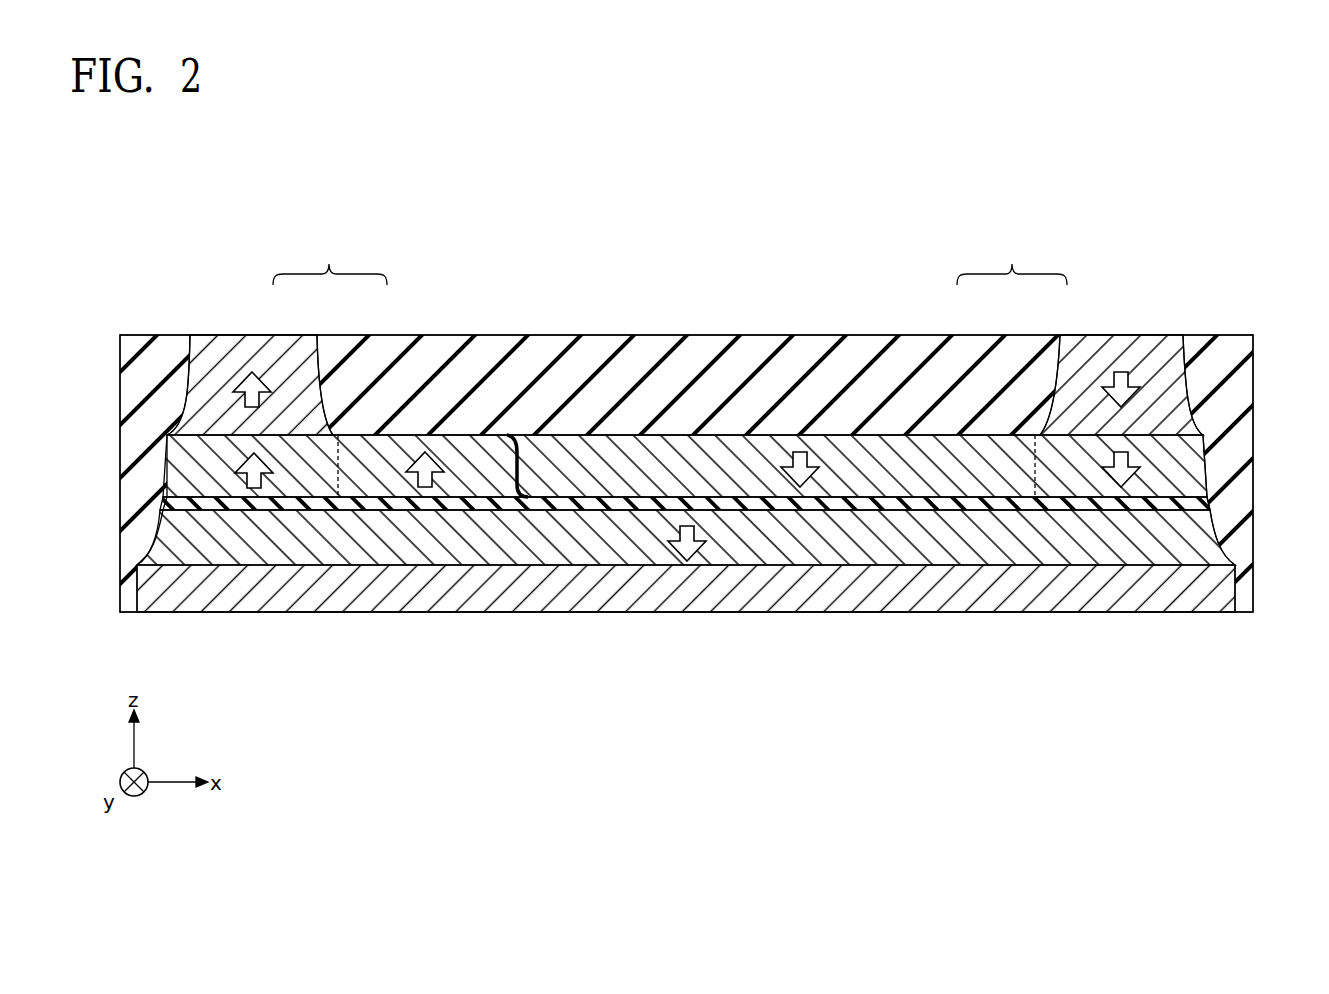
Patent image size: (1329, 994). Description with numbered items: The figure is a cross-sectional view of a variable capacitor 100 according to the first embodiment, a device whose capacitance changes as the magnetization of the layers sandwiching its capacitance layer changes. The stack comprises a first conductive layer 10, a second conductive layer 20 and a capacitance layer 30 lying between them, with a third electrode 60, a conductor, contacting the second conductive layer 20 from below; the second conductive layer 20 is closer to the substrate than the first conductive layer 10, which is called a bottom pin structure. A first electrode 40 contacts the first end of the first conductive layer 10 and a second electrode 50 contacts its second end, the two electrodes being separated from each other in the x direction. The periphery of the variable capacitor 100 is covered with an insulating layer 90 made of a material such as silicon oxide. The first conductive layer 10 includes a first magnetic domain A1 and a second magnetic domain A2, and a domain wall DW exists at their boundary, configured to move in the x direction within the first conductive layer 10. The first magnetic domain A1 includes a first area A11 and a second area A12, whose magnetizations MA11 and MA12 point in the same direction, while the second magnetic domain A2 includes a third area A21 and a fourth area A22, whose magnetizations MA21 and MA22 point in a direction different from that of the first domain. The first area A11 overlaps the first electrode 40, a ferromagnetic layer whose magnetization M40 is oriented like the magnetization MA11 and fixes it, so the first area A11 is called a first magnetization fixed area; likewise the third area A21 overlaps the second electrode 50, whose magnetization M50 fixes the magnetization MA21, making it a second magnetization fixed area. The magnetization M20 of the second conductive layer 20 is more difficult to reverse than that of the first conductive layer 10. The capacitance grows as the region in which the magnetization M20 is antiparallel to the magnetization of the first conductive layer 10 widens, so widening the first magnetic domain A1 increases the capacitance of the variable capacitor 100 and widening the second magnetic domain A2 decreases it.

The variable capacitor 100 is at (1192, 143).
The first conductive layer 10 is at (1192, 468).
The second conductive layer 20 is at (1203, 530).
The capacitance layer 30 is at (1205, 505).
The first electrode 40 is at (200, 392).
The second electrode 50 is at (1180, 387).
The third electrode 60 is at (1225, 590).
The insulating layer 90 is at (908, 335).
The domain wall DW is at (529, 447).
The first magnetic domain A1 is at (330, 258).
The first area A11 is at (300, 447).
The second area A12 is at (364, 447).
The second magnetic domain A2 is at (1012, 258).
The third area A21 is at (1050, 447).
The fourth area A22 is at (992, 447).
The magnetization of the first electrode M40 is at (252, 385).
The magnetization of the second electrode M50 is at (1121, 385).
The magnetization of the second conductive layer M20 is at (684, 547).
The magnetization of the first area MA11 is at (253, 473).
The magnetization of the second area MA12 is at (423, 453).
The magnetization of the third area MA21 is at (1122, 475).
The magnetization of the fourth area MA22 is at (799, 455).